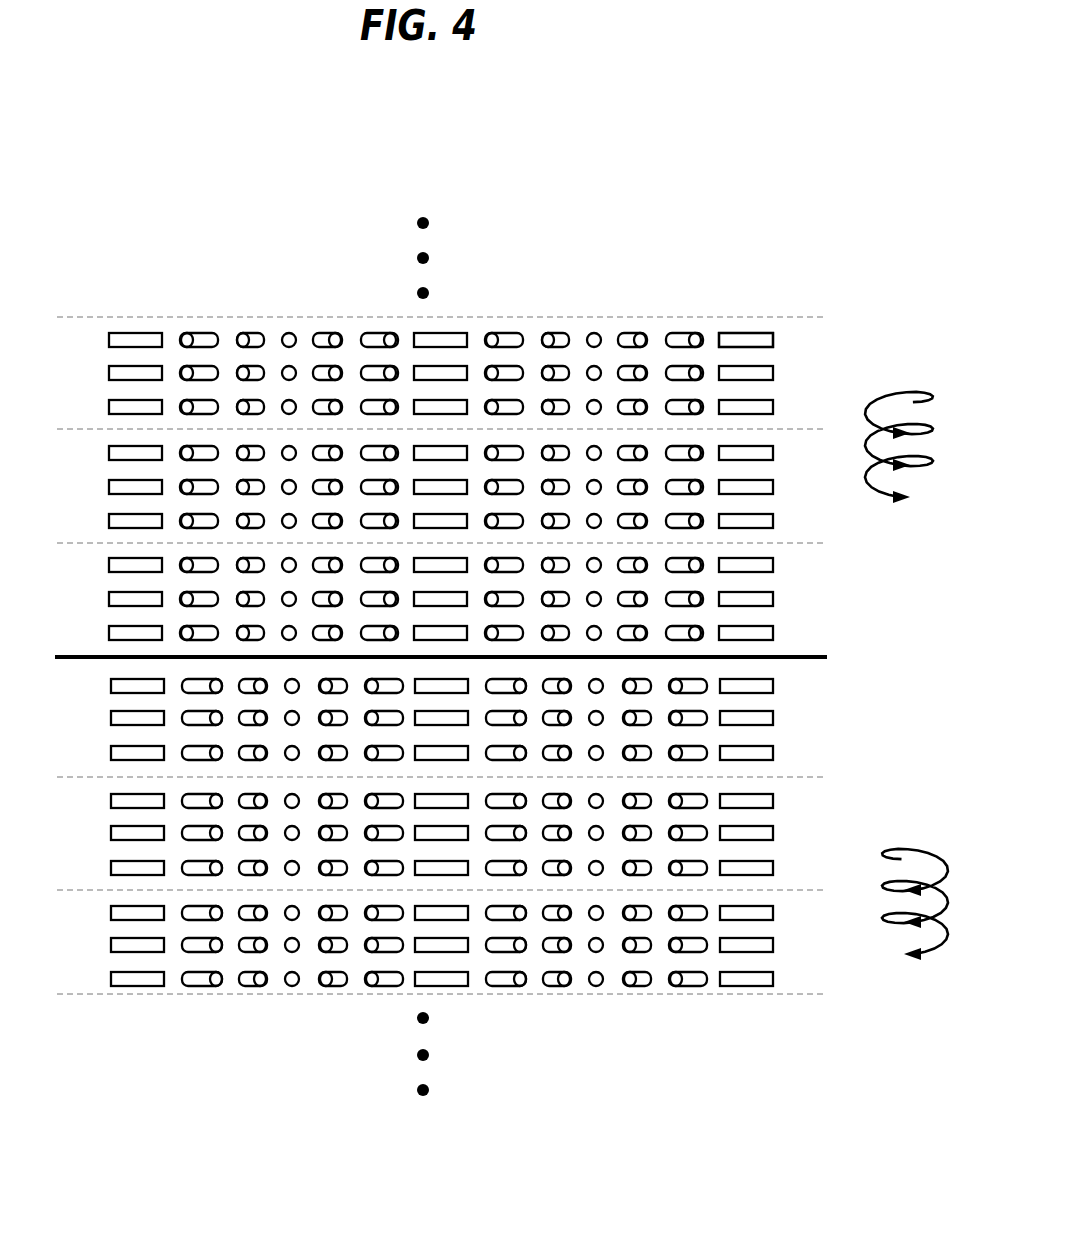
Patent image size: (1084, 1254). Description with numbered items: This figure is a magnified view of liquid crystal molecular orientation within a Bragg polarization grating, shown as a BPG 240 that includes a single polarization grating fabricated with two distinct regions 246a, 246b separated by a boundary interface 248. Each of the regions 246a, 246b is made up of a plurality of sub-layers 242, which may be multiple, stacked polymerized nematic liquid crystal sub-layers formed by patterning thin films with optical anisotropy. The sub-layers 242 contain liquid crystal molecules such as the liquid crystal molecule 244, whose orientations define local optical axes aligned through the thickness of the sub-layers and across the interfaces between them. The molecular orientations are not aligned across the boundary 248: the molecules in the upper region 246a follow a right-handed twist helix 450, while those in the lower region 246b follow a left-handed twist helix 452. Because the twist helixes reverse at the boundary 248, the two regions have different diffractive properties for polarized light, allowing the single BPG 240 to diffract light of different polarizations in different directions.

The BPG 240 is at (112, 232).
The sub-layers 242 is at (412, 659).
The liquid crystal molecule 244 is at (752, 332).
The region 246a is at (927, 578).
The region 246b is at (927, 785).
The boundary interface 248 is at (807, 650).
The right-handed twist helix 450 is at (903, 388).
The left-handed twist helix 452 is at (933, 954).